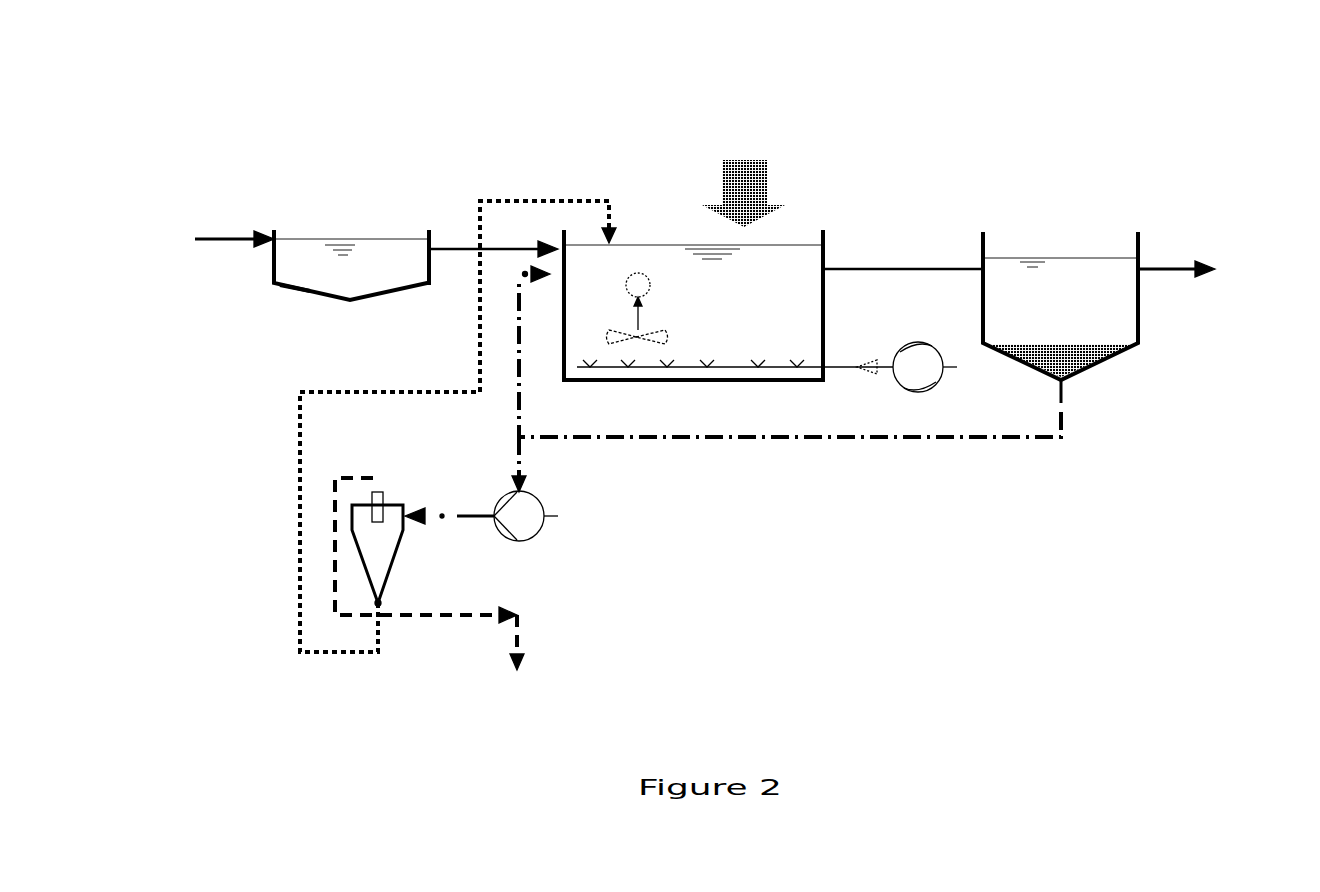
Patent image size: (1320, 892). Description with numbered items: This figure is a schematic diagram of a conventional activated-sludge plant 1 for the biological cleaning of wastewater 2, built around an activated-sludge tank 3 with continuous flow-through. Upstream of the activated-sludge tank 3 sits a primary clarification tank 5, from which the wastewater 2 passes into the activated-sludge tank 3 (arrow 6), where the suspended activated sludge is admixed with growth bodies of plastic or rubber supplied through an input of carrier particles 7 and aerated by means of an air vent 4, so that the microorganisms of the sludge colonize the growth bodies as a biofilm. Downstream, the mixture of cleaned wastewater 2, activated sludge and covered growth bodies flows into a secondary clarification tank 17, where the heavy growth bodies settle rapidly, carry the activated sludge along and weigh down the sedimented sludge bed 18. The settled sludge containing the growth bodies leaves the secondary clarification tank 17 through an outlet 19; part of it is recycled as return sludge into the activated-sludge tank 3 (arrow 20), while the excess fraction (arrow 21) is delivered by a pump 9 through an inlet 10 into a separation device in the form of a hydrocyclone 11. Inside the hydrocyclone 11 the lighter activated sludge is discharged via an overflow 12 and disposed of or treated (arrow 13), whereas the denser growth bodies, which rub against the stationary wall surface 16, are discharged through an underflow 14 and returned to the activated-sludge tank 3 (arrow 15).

The activated-sludge plant 1 is at (930, 150).
The wastewater 2 is at (313, 265).
The activated-sludge tank 3 is at (826, 309).
The air vent 4 is at (707, 365).
The primary clarification tank 5 is at (296, 290).
The arrow 6 is at (463, 249).
The input of carrier particles 7 is at (740, 204).
The pump 9 is at (545, 535).
The inlet 10 is at (412, 512).
The hydrocyclone 11 is at (418, 560).
The overflow 12 is at (383, 500).
The arrow 13 is at (516, 630).
The underflow 14 is at (375, 604).
The arrow 15 is at (551, 201).
The wall surface 16 is at (386, 545).
The secondary clarification tank 17 is at (1138, 318).
The sedimented sludge bed 18 is at (1095, 366).
The outlet 19 is at (1065, 385).
The arrow 20 is at (523, 368).
The arrow 21 is at (527, 460).